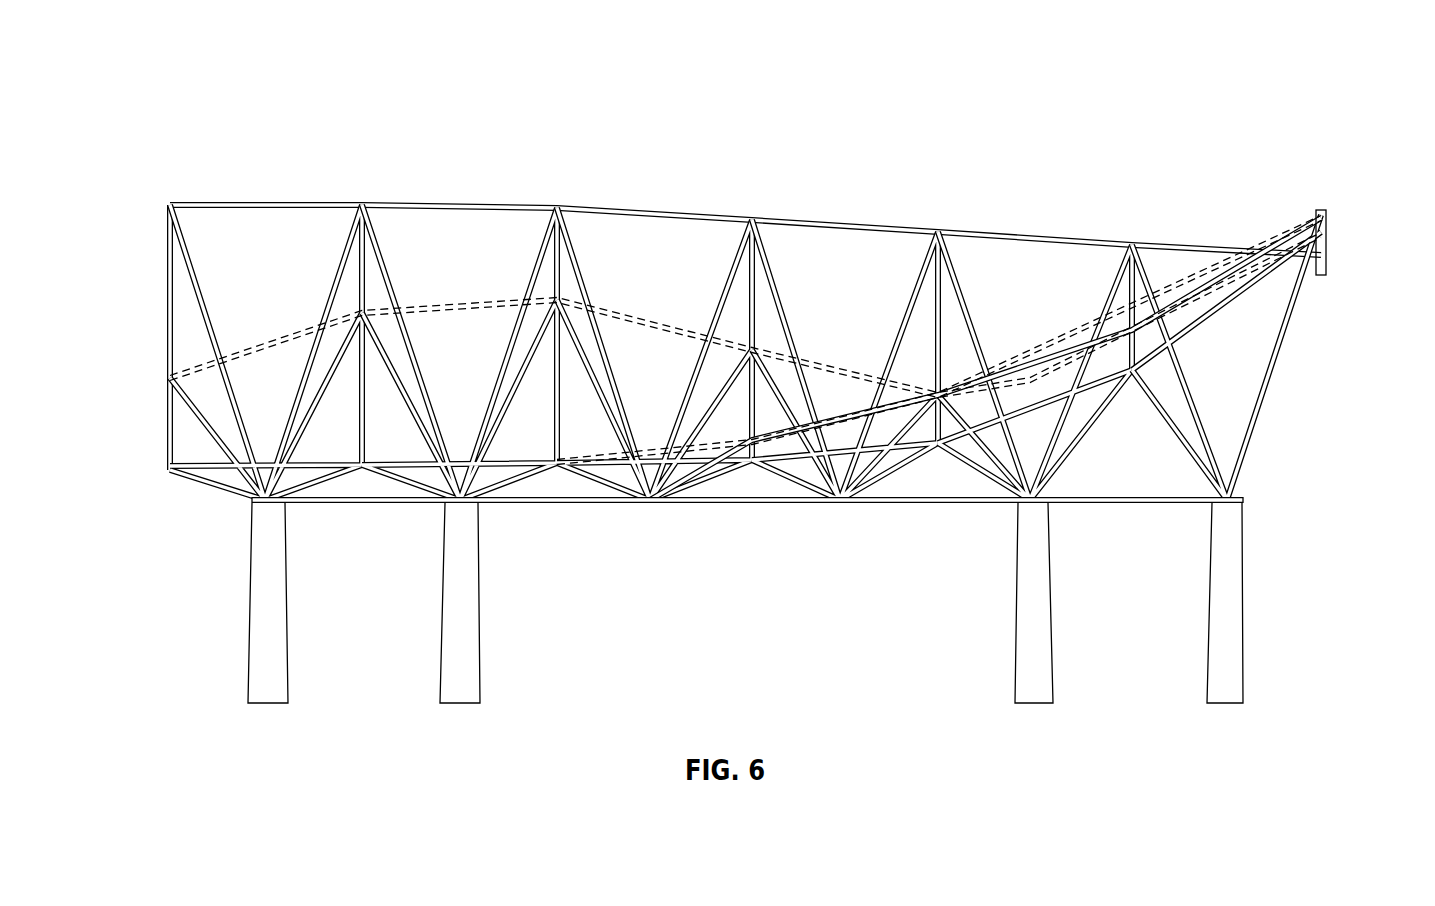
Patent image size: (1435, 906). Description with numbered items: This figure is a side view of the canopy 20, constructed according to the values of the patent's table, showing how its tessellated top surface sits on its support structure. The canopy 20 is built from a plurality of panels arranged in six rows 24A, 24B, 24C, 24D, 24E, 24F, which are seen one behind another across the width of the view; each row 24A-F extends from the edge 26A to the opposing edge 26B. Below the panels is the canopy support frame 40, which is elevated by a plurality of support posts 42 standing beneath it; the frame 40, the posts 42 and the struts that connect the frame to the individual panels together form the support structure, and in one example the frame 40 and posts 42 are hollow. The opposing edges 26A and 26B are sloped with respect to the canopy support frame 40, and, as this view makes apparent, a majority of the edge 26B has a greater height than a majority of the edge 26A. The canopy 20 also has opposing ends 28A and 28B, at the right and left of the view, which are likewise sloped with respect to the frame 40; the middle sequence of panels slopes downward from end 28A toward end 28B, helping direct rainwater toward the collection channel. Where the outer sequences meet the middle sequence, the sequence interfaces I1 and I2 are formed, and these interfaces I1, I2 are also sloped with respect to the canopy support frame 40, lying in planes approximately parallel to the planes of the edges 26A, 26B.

The canopy 20 is at (1241, 84).
The row 24A is at (1226, 190).
The row 24B is at (1046, 190).
The row 24C is at (838, 190).
The row 24D is at (669, 190).
The row 24E is at (459, 190).
The row 24F is at (278, 190).
The edge 26A is at (448, 304).
The edge 26B is at (635, 210).
The end 28A is at (1336, 215).
The end 28B is at (138, 233).
The canopy support frame 40 is at (570, 506).
The support posts 42 is at (260, 643).
The sequence interface I1 is at (700, 447).
The sequence interface I2 is at (847, 453).